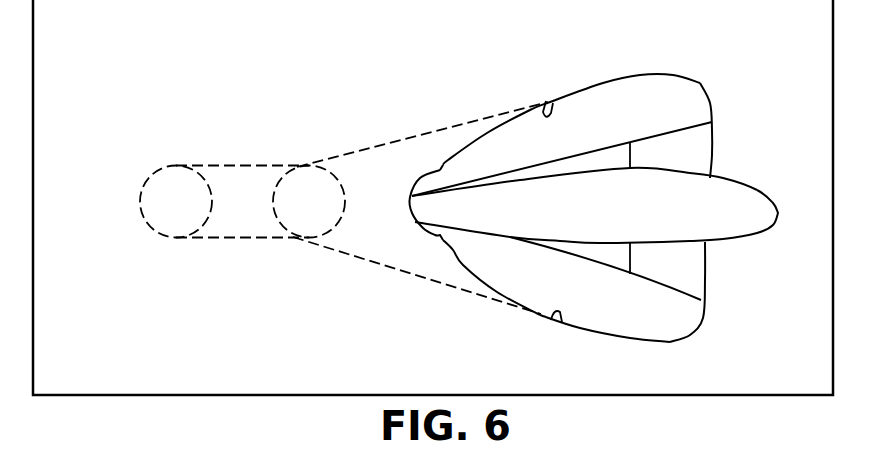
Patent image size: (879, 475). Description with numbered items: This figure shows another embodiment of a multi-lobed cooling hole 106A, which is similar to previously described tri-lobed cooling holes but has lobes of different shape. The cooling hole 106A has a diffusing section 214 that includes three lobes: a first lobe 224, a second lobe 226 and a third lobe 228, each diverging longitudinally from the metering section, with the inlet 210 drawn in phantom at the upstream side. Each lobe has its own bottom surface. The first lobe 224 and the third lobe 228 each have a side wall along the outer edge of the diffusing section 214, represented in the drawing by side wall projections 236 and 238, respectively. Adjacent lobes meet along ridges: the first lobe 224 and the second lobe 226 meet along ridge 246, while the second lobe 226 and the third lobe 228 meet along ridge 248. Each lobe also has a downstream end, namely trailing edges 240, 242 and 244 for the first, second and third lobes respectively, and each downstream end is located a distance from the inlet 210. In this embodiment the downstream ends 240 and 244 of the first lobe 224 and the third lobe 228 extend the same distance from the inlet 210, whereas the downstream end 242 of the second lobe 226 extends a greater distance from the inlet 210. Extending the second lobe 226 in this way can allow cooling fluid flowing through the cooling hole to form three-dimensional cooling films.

The cooling hole 106A is at (428, 142).
The inlet 210 is at (168, 217).
The diffusing section 214 is at (506, 287).
The first lobe 224 is at (594, 104).
The second lobe 226 is at (735, 196).
The third lobe 228 is at (628, 318).
The side wall projection 236 is at (549, 102).
The side wall projection 238 is at (560, 316).
The trailing edge 240 is at (711, 100).
The trailing edge 242 is at (781, 211).
The trailing edge 244 is at (700, 324).
The ridge 246 is at (585, 172).
The ridge 248 is at (585, 242).